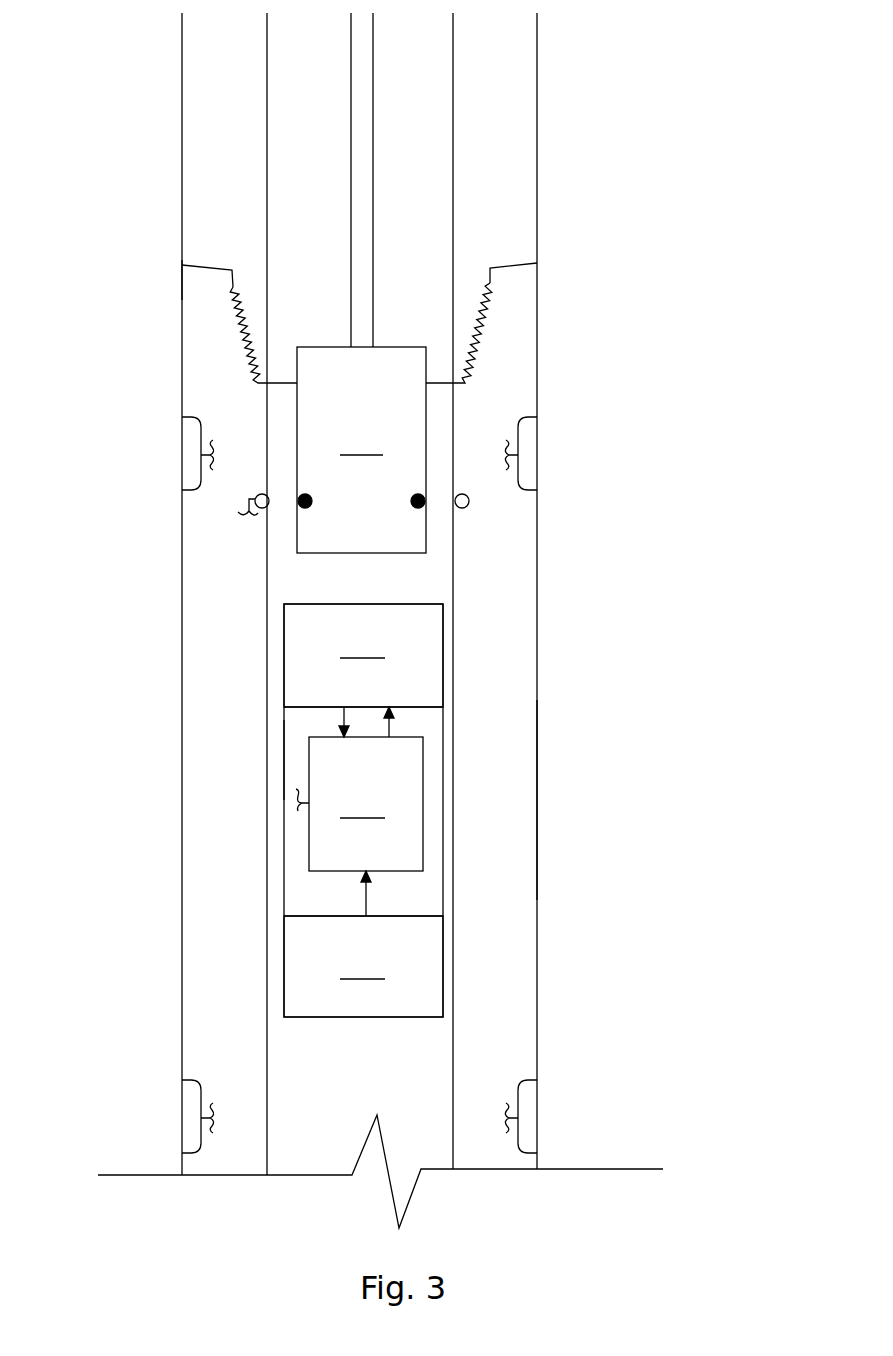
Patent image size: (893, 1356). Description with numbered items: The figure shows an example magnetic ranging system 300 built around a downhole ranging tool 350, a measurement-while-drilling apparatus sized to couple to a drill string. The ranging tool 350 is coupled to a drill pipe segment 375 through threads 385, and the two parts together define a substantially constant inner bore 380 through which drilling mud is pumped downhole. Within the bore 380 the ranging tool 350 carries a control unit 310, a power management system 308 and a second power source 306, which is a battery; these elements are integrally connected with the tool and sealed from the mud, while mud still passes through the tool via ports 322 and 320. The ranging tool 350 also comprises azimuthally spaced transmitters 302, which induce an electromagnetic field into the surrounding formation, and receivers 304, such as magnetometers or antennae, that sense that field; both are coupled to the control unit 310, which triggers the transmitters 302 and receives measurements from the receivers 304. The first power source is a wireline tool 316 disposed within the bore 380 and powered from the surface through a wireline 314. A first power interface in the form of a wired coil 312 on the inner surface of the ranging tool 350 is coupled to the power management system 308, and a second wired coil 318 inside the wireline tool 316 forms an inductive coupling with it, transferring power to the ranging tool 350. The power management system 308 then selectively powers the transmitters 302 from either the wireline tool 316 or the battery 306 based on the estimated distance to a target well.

The magnetic ranging system 300 is at (650, 288).
The transmitters 302 is at (187, 455).
The receivers 304 is at (189, 1123).
The second power source 306 is at (363, 966).
The power management system 308 is at (359, 811).
The control unit 310 is at (363, 655).
The first power interface (wired coil) 312 is at (469, 503).
The wireline 314 is at (373, 253).
The wireline tool 316 is at (361, 450).
The second power interface (second wired coil) 318 is at (426, 525).
The port 320 is at (457, 763).
The port 322 is at (284, 755).
The ranging tool 350 is at (545, 837).
The drill pipe segment 375 is at (537, 128).
The inner bore 380 is at (267, 157).
The threads 385 is at (240, 318).